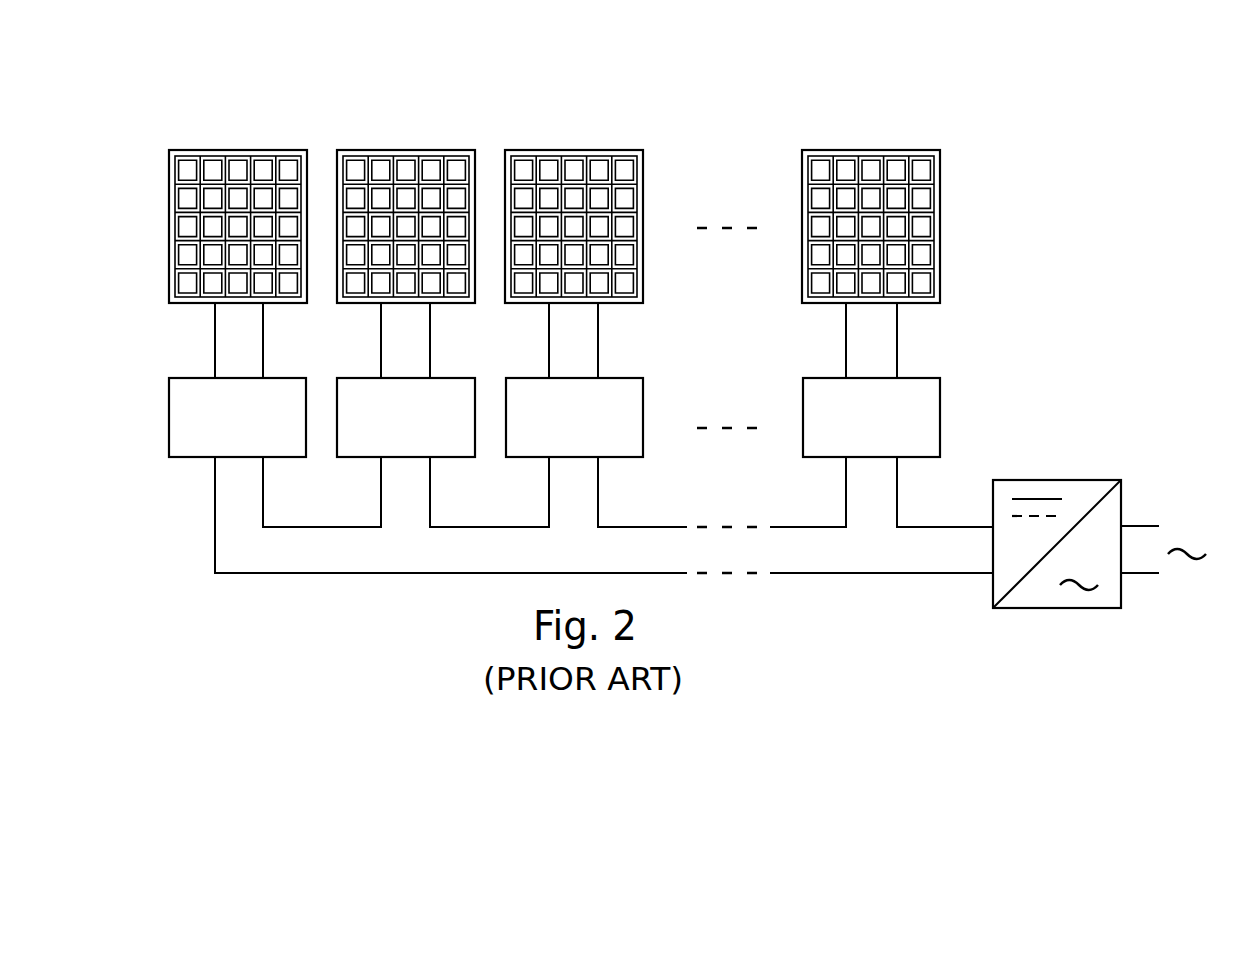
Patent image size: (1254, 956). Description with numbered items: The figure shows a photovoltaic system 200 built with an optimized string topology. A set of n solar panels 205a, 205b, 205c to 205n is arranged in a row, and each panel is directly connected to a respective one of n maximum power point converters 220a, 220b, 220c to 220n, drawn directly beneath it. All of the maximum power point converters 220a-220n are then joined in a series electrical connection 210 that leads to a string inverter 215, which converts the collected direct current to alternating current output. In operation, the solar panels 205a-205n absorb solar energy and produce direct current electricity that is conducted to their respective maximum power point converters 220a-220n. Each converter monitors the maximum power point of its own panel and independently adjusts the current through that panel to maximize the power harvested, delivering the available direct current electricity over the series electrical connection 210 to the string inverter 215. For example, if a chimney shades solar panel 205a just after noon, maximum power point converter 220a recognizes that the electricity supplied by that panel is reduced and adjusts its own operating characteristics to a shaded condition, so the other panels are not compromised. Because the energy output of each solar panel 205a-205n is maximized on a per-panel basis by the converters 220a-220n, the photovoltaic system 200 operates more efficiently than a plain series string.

The photovoltaic system 200 is at (196, 76).
The solar panel 205a is at (231, 150).
The solar panel 205b is at (402, 150).
The solar panel 205c is at (587, 150).
The solar panel 205n is at (888, 150).
The maximum power point converter 220a is at (180, 378).
The maximum power point converter 220b is at (362, 378).
The maximum power point converter 220c is at (530, 378).
The maximum power point converter 220n is at (922, 378).
The series electrical connection 210 is at (307, 573).
The string inverter 215 is at (1069, 480).